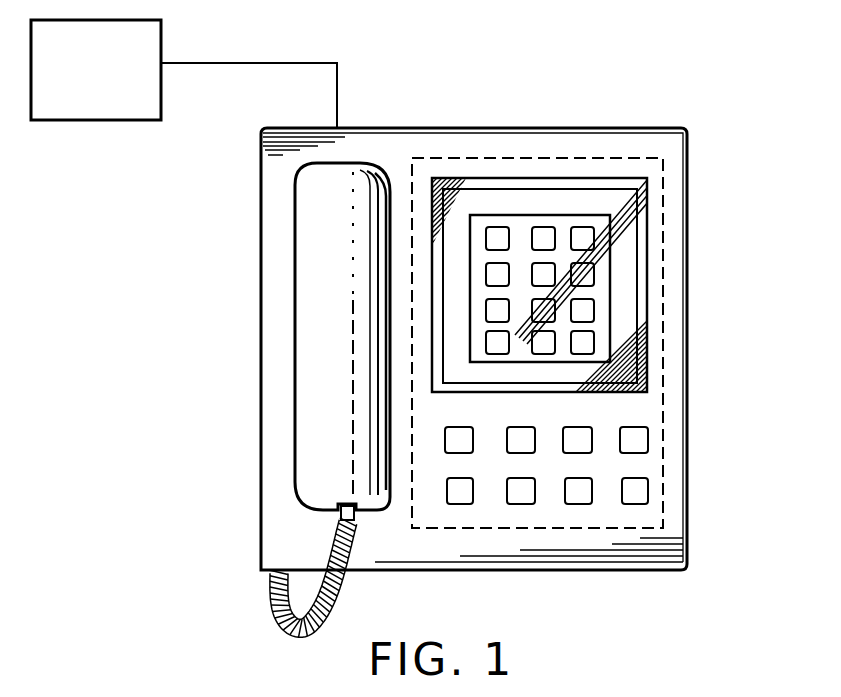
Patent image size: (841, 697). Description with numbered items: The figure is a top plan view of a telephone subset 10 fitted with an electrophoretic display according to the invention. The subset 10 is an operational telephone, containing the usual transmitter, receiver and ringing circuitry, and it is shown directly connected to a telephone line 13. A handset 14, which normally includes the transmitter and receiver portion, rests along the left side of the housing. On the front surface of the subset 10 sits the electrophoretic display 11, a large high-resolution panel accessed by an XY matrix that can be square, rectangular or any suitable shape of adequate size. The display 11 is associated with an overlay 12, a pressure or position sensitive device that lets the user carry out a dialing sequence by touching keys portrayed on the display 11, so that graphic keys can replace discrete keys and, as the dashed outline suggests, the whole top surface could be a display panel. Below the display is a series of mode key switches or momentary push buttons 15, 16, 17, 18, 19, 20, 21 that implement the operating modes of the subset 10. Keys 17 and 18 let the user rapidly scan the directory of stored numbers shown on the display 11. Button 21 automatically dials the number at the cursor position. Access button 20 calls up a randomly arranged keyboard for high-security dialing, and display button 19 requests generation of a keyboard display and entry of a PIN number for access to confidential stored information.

The telephone subset 10 is at (684, 152).
The electrophoretic display 11 is at (630, 222).
The overlay 12 is at (647, 252).
The telephone line 13 is at (161, 52).
The handset 14 is at (305, 410).
The mode key switch 15 is at (456, 427).
The mode key switch 16 is at (512, 427).
The scan key 17 is at (569, 427).
The scan key 18 is at (648, 431).
The display button 19 is at (463, 504).
The access button 20 is at (648, 490).
The dial button 21 is at (580, 504).